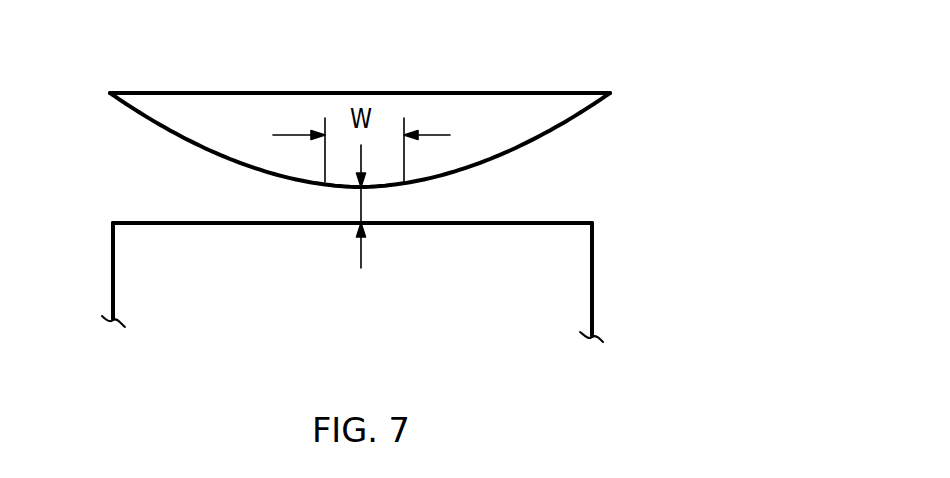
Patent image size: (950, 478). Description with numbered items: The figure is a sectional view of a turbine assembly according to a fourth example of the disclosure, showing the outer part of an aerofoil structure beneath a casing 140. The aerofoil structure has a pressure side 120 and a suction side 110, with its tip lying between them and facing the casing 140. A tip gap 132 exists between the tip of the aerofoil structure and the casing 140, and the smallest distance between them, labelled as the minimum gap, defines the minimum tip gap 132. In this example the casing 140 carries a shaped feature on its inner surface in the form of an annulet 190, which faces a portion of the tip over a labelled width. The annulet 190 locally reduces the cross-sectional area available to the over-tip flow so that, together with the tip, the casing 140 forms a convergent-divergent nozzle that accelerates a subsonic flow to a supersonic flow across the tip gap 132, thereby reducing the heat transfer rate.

The casing 140 is at (533, 112).
The annulet 190 is at (474, 166).
The tip gap 132 is at (362, 203).
The pressure side 120 is at (112, 278).
The suction side 110 is at (593, 290).